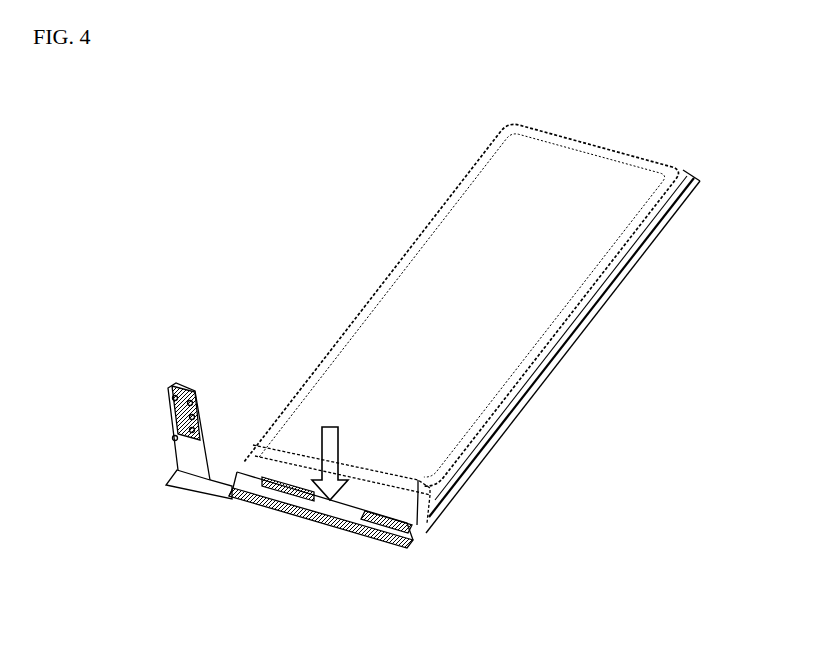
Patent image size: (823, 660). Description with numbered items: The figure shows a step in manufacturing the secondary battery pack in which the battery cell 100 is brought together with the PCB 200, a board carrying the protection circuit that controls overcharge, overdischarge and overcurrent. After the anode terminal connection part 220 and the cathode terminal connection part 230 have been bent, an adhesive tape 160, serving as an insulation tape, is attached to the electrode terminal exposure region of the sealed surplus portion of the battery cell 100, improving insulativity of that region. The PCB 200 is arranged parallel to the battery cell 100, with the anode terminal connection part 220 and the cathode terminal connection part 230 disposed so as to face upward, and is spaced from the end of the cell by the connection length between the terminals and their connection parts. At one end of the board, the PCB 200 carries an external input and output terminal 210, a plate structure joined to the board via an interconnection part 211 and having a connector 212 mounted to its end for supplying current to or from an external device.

The battery cell 100 is at (587, 159).
The adhesive tape 160 is at (345, 497).
The PCB 200 is at (342, 532).
The external input and output terminal 210 is at (133, 441).
The interconnection part 211 is at (165, 478).
The connector 212 is at (173, 413).
The anode terminal connection part 220 is at (268, 515).
The cathode terminal connection part 230 is at (373, 537).